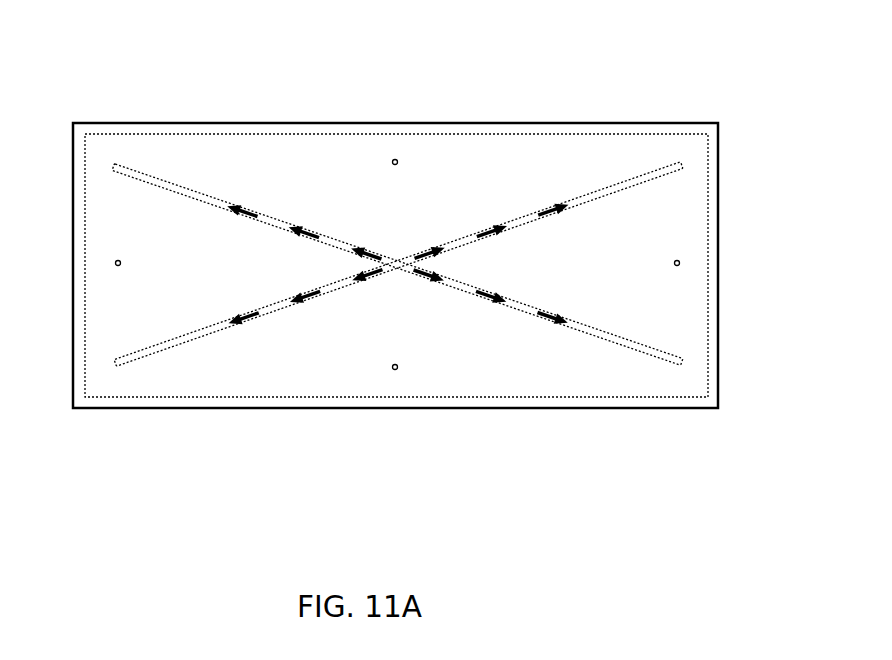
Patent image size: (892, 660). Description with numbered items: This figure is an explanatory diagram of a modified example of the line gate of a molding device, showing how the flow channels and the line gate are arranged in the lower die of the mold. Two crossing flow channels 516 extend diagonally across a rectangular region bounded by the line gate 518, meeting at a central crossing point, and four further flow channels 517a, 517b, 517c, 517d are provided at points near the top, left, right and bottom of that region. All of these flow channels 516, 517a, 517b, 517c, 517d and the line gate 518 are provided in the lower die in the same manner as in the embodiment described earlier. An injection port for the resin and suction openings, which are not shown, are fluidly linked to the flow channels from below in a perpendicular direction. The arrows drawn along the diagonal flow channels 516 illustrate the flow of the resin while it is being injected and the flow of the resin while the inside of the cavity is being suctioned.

The flow channel 516 is at (402, 262).
The flow channel 517a is at (118, 263).
The flow channel 517b is at (396, 162).
The flow channel 517c is at (677, 263).
The flow channel 517d is at (395, 367).
The line gate 518 is at (625, 180).